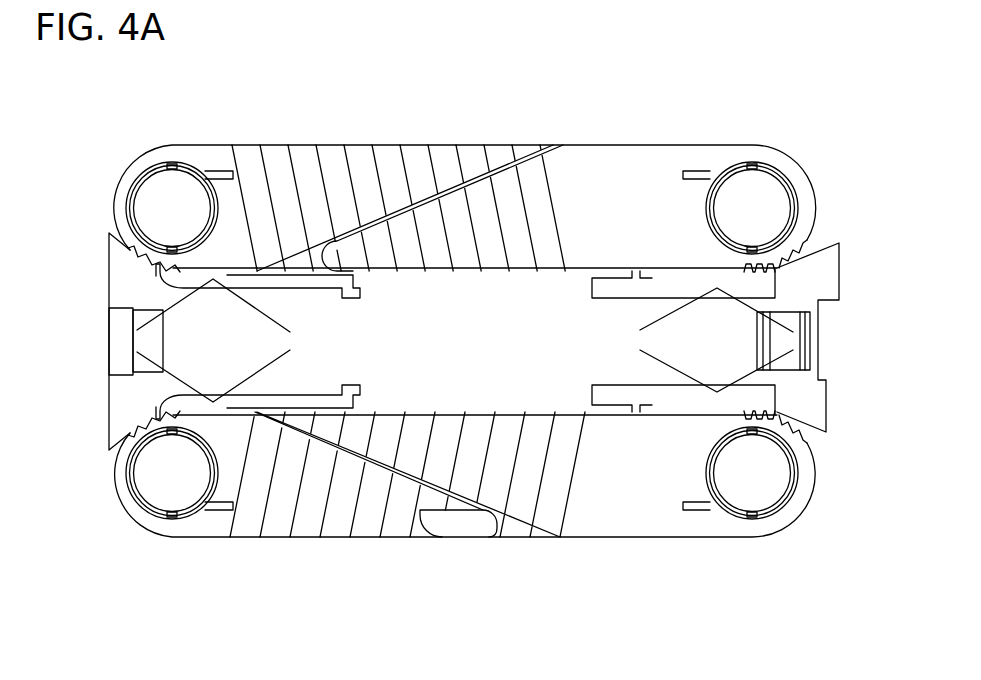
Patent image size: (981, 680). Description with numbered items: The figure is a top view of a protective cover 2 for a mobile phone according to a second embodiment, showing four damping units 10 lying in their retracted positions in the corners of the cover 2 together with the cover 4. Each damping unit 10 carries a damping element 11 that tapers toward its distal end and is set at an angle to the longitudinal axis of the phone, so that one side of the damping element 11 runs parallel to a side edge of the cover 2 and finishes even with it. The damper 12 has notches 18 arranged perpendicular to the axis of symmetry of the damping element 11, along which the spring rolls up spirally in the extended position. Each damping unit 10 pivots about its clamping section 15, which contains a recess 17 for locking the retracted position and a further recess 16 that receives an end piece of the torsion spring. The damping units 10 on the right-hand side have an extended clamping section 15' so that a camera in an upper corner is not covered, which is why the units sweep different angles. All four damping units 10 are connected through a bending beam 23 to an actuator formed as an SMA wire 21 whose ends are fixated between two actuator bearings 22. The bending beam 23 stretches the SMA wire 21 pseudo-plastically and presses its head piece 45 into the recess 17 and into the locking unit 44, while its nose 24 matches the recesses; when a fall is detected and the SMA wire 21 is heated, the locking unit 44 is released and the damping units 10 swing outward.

The protective cover 2 is at (817, 128).
The cover 4 is at (503, 170).
The damping unit 10 is at (615, 163).
The damping element 11 is at (302, 540).
The damper 12 is at (306, 163).
The clamping section 15 is at (172, 342).
The extended clamping section 15' is at (752, 342).
The recess 16 is at (693, 166).
The recess 17 is at (133, 252).
The notch 18 is at (442, 540).
The SMA wire 21 is at (810, 332).
The actuator bearing 22 is at (810, 320).
The bending beam 23 is at (668, 292).
The nose 24 is at (155, 278).
The locking unit 44 is at (156, 394).
The head piece 45 is at (765, 283).